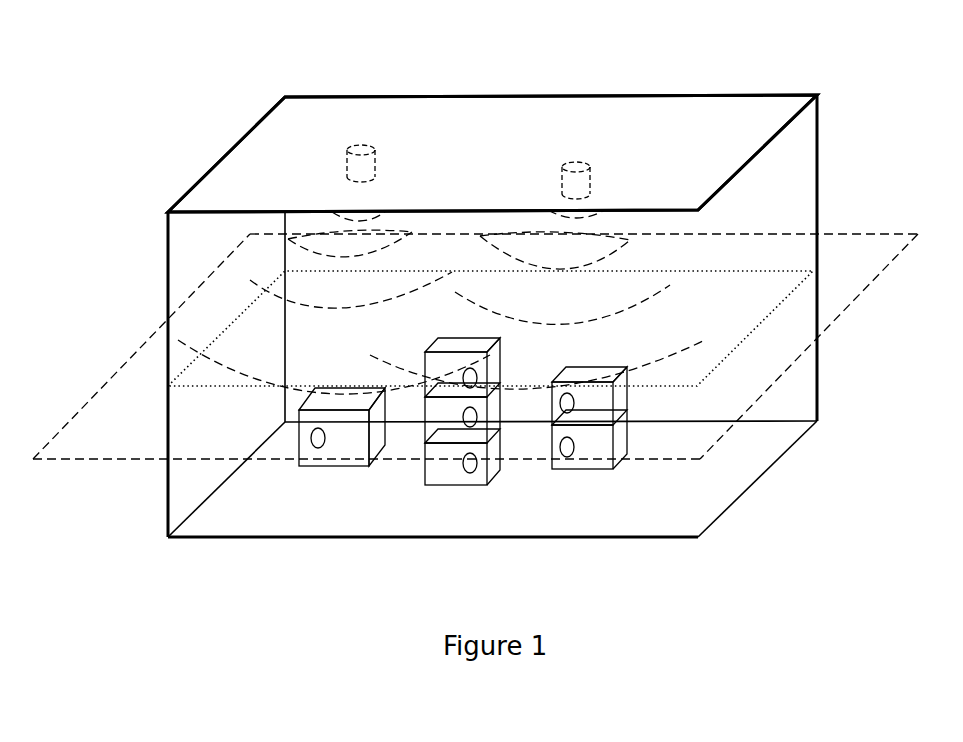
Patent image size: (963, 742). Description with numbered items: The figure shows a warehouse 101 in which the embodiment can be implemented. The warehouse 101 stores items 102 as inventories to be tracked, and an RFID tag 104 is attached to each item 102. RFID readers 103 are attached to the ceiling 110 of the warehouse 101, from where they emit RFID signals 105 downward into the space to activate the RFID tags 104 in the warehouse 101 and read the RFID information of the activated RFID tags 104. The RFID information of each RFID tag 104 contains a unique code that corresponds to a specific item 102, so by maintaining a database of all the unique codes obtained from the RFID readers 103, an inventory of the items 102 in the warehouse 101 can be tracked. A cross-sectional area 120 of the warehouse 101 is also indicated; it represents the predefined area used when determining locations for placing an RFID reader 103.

The warehouse 101 is at (572, 97).
The ceiling 110 is at (288, 184).
The RFID readers 103 is at (554, 152).
The RFID signals 105 is at (317, 327).
The cross-sectional area 120 is at (764, 341).
The items 102 is at (427, 494).
The RFID tags 104 is at (590, 449).